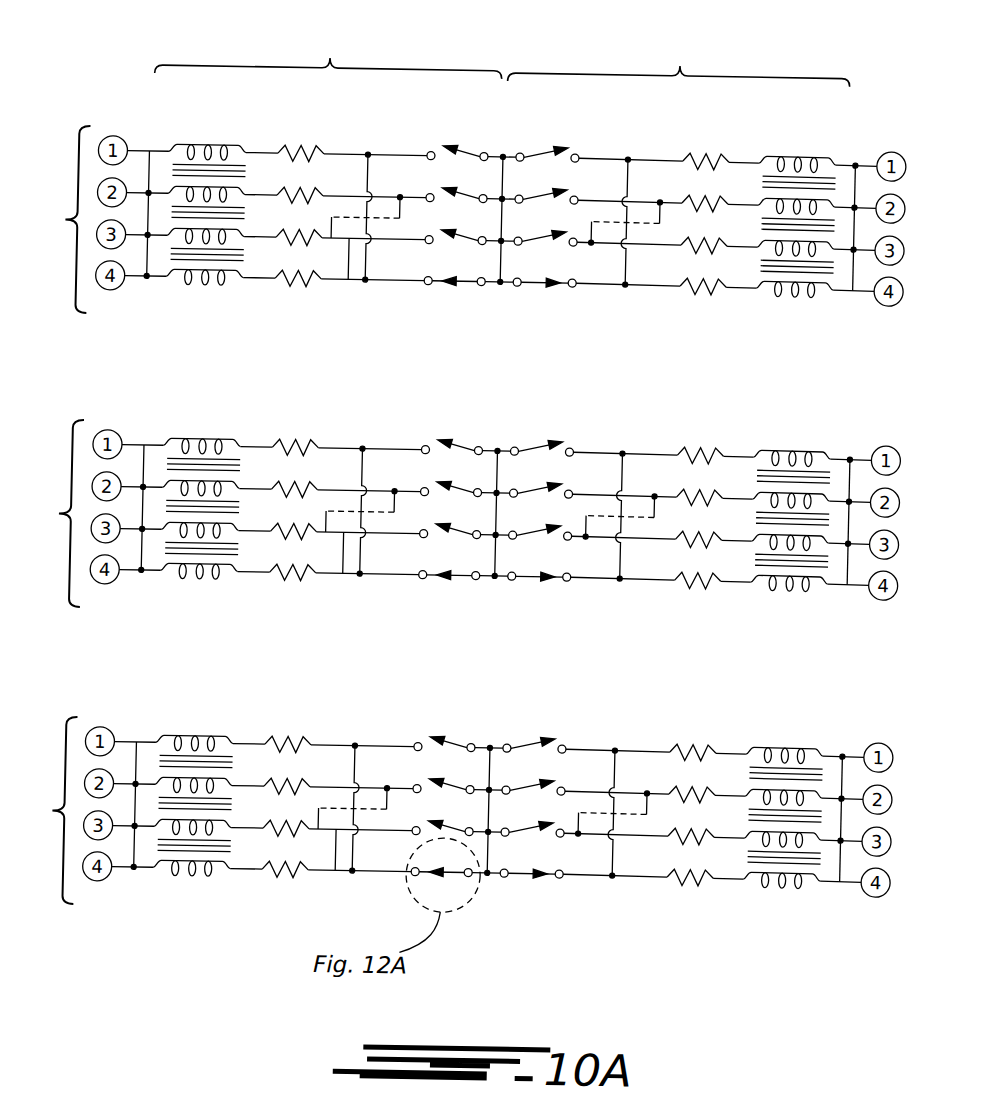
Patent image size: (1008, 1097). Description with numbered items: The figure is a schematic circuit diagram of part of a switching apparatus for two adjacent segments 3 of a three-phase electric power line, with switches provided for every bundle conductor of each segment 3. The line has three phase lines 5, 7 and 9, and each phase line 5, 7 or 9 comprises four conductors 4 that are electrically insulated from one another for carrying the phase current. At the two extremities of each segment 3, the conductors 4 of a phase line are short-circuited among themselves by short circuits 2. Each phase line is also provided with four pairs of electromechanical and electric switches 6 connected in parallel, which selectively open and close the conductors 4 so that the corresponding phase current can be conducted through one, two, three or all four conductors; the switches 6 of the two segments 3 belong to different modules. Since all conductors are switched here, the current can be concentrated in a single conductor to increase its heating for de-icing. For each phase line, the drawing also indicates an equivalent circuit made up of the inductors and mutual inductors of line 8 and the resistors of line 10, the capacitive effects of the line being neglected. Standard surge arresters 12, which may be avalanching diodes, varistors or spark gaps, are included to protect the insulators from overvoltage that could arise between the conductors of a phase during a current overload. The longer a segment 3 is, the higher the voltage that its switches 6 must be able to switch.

The short circuit 2 is at (142, 152).
The segment 3 is at (503, 57).
The conductor 4 is at (400, 198).
The phase line 5 is at (67, 219).
The pair of electromechanical and electric switches 6 is at (510, 197).
The phase line 7 is at (60, 513).
The inductors and mutual inductors of line 8 is at (243, 192).
The phase line 9 is at (55, 810).
The resistors of line 10 is at (306, 273).
The surge arrester 12 is at (381, 254).